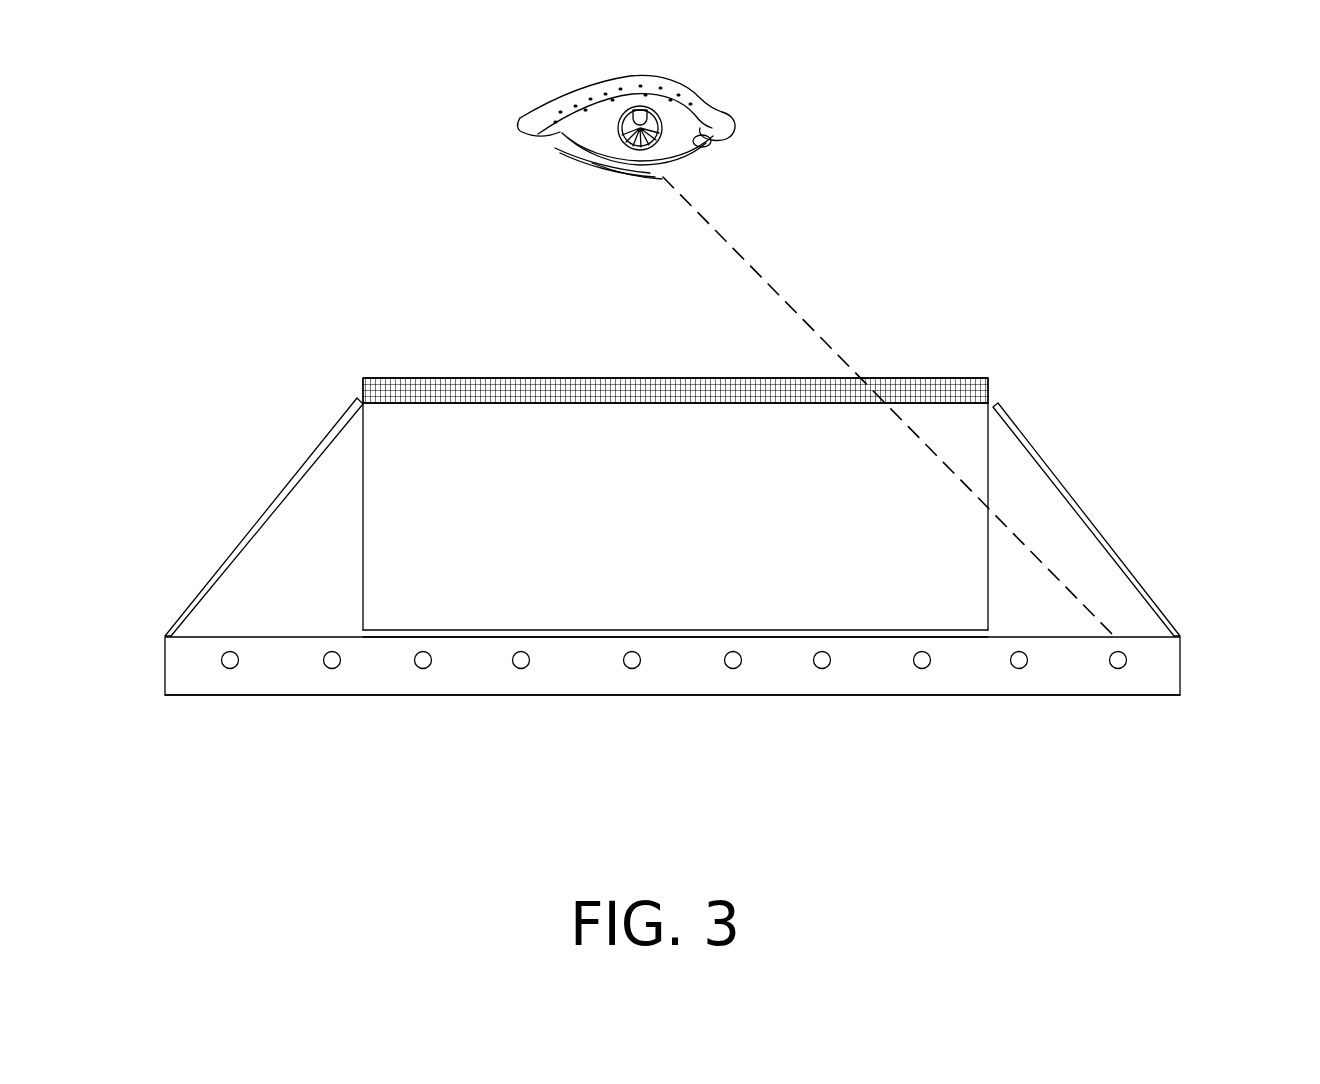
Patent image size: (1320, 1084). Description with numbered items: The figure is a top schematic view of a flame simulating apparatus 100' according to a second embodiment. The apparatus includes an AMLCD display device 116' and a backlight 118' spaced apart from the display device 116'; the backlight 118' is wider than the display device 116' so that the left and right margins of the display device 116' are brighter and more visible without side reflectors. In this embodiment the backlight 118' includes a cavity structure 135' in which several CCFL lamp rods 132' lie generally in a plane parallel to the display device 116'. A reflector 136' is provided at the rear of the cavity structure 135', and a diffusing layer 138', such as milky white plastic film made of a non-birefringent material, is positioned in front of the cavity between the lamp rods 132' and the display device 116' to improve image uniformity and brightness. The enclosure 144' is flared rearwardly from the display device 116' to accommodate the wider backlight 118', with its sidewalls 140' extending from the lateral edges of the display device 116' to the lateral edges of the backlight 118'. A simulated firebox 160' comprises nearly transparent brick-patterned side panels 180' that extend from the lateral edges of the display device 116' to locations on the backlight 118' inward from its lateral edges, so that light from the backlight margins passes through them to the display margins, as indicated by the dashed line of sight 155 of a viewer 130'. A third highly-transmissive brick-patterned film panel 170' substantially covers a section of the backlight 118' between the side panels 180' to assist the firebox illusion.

The flame simulating apparatus 100' is at (726, 530).
The viewer 130' is at (593, 141).
The line of sight 155 is at (770, 280).
The AMLCD display device 116' is at (675, 339).
The simulated firebox 160' is at (741, 497).
The brick-patterned panels 180' is at (675, 516).
The third highly-transmissive brick-patterned film panel 170' is at (675, 571).
The diffusing layer 138' is at (675, 584).
The sidewalls 140' is at (726, 517).
The enclosure 144' is at (1140, 519).
The CCFL lamp rods 132' is at (674, 723).
The backlight 118' is at (672, 729).
The cavity structure 135' is at (474, 725).
The reflector 136' is at (940, 745).